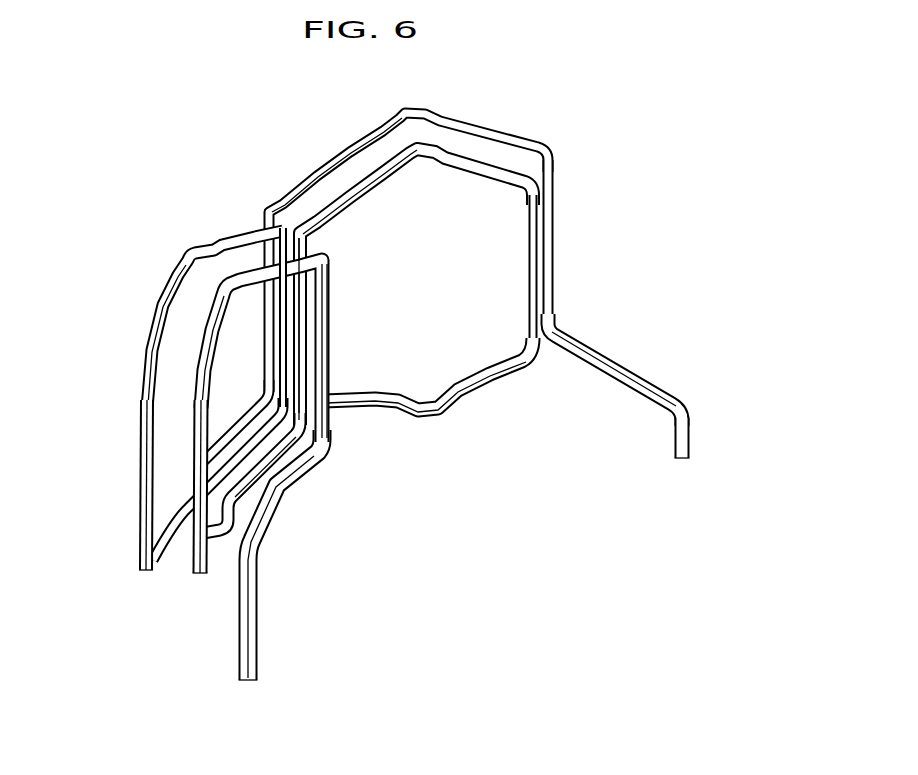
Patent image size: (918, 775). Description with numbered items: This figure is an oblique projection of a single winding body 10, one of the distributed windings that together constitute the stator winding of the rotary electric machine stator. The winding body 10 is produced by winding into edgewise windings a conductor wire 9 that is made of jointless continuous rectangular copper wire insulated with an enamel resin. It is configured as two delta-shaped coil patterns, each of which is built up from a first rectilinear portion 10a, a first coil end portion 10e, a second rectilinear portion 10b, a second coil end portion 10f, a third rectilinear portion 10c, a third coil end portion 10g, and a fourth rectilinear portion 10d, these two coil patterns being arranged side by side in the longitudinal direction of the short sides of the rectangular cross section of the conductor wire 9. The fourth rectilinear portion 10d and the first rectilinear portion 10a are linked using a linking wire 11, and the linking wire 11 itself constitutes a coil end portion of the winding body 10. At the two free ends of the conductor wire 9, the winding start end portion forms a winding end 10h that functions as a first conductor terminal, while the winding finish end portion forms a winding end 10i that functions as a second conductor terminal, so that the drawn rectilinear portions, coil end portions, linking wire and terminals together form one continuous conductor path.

The winding body 10 is at (162, 114).
The first rectilinear portion 10a is at (288, 310).
The second rectilinear portion 10b is at (194, 430).
The third rectilinear portion 10c is at (302, 352).
The fourth rectilinear portion 10d is at (538, 250).
The first coil end portion 10e is at (208, 328).
The second coil end portion 10f is at (230, 440).
The third coil end portion 10g is at (347, 200).
The winding end 10h is at (258, 605).
The winding end 10i is at (668, 440).
The conductor wire 9 is at (612, 358).
The linking wire 11 is at (468, 400).